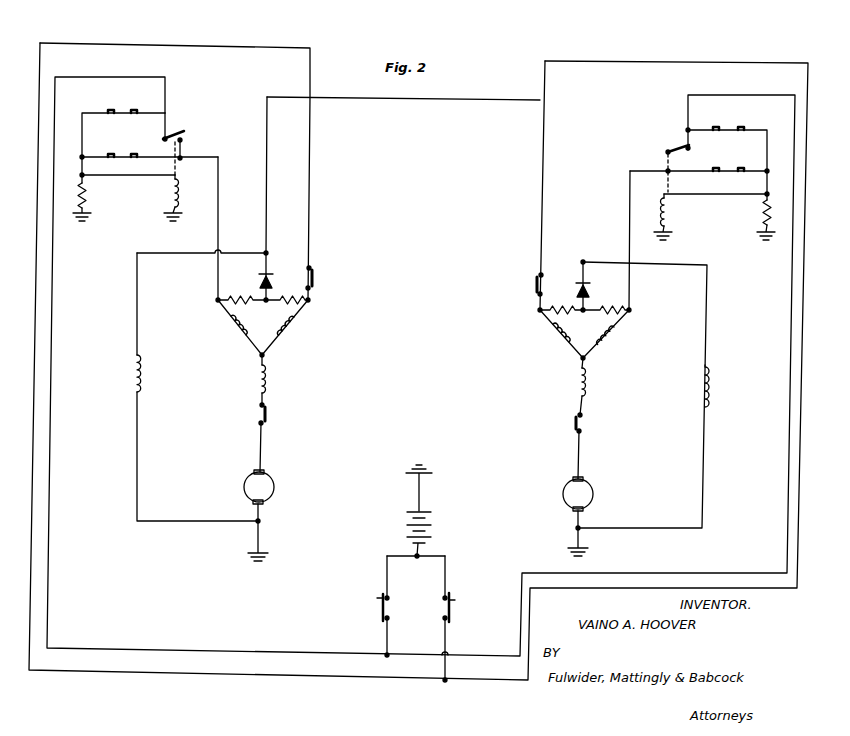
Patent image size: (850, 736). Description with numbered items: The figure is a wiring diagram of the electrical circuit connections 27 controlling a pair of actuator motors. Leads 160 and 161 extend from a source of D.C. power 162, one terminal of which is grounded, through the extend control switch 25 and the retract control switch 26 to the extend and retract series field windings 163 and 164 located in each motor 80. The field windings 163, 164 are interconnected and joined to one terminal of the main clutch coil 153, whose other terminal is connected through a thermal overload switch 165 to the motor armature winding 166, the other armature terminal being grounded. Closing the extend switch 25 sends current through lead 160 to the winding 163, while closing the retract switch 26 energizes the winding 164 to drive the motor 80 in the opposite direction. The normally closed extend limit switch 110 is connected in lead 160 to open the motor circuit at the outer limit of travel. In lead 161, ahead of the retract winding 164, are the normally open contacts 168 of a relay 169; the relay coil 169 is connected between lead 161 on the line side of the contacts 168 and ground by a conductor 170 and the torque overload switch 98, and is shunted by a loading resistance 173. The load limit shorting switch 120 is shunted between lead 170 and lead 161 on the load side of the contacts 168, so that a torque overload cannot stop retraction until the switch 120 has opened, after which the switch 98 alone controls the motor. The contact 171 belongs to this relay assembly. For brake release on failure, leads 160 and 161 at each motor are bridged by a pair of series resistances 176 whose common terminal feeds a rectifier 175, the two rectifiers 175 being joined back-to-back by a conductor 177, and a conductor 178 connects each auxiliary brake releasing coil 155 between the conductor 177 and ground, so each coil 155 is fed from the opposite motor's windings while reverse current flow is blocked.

The lead 160 is at (238, 47).
The lead 161 is at (220, 192).
The conductor 177 is at (436, 100).
The torque overload switch 98 is at (130, 108).
The conductor 170 is at (82, 128).
The relay contact 171 is at (149, 158).
The contacts 168 is at (172, 128).
The load limit shorting switch 120 is at (126, 160).
The relay 169 is at (184, 200).
The loading resistance 173 is at (79, 204).
The rectifier 175 is at (271, 290).
The extend limit switch 110 is at (319, 280).
The resistance 176 is at (218, 299).
The motor 80 is at (336, 356).
The extend series field winding 163 is at (293, 324).
The retract series field winding 164 is at (232, 317).
The main clutch coil 153 is at (266, 380).
The thermal overload switch 165 is at (273, 417).
The motor armature winding 166 is at (258, 482).
The conductor 178 is at (138, 318).
The auxiliary brake releasing coil 155 is at (143, 383).
The source of D.C. power 162 is at (430, 528).
The retract control switch 26 is at (380, 612).
The extend control switch 25 is at (452, 603).
The electrical circuit connections 27 is at (412, 665).